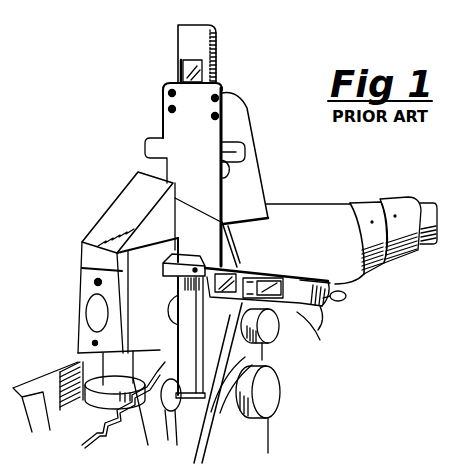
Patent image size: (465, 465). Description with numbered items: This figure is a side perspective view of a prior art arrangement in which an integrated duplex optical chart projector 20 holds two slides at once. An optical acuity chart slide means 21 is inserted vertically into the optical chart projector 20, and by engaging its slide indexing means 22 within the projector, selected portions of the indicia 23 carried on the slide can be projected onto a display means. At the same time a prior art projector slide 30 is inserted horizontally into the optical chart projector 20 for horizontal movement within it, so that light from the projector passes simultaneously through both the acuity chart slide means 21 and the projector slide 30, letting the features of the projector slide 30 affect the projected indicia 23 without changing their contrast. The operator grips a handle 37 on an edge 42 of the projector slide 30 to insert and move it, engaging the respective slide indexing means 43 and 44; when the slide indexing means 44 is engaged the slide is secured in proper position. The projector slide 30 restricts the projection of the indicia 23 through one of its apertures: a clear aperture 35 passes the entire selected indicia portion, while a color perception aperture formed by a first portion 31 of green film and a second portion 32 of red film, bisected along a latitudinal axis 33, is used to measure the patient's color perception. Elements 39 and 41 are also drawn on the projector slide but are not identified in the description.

The optical chart projector 20 is at (287, 176).
The optical acuity chart slide means 21 is at (227, 30).
The slide indexing means 22 is at (218, 48).
The indicia 23 is at (183, 72).
The prior art projector slide 30 is at (339, 281).
The first portion of color perception aperture 31 is at (267, 278).
The second portion of color perception aperture 32 is at (287, 318).
The latitudinal axis 33 is at (272, 330).
The clear aperture 35 is at (239, 305).
The handle 37 is at (347, 295).
The barrel mounting rim 39 is at (308, 279).
The arcuate link 41 is at (307, 320).
The edge 42 is at (320, 316).
The slide indexing means 43 is at (233, 243).
The slide indexing means 44 is at (266, 272).